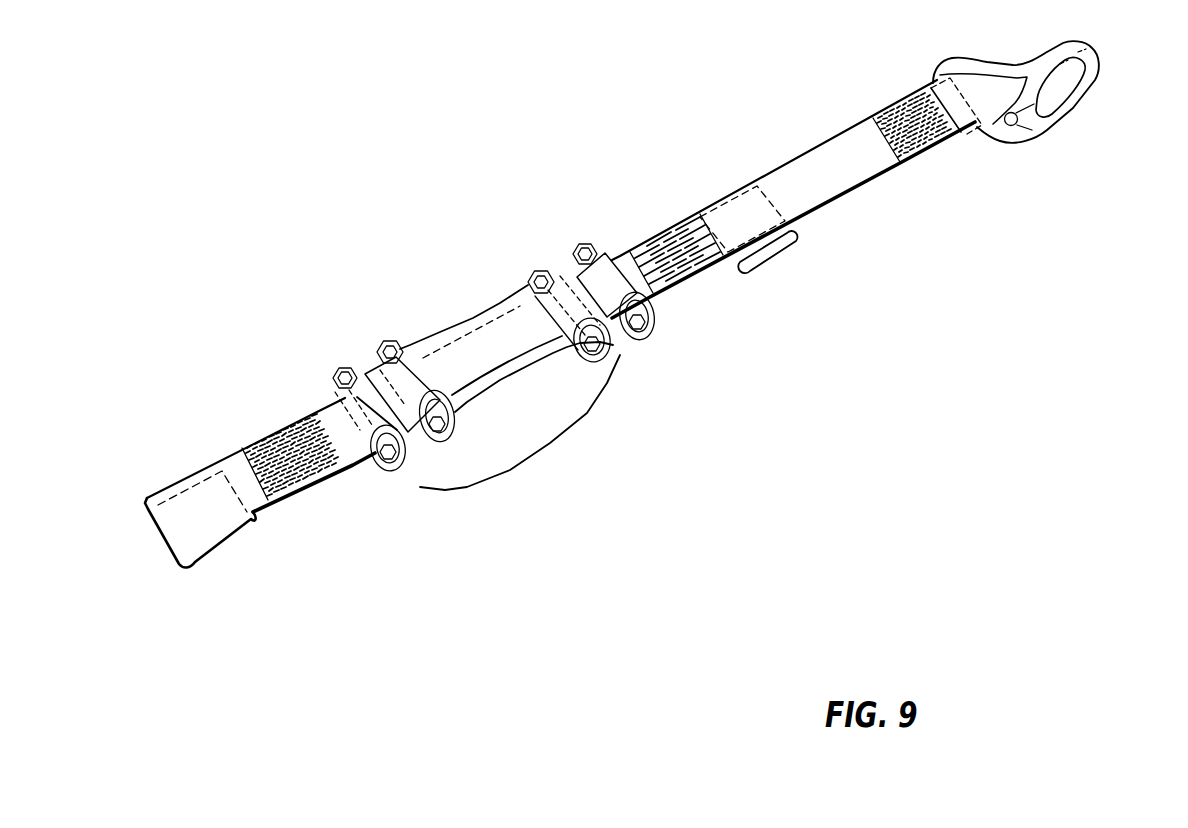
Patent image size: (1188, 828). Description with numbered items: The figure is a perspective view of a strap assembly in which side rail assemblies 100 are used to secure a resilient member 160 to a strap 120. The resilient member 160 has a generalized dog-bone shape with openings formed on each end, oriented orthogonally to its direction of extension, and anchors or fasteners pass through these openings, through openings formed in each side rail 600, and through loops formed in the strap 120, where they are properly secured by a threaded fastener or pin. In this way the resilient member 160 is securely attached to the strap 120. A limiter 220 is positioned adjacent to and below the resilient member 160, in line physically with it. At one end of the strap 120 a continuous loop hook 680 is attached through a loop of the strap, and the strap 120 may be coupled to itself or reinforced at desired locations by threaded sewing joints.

The side rail assembly 100 is at (658, 318).
The strap 120 is at (827, 142).
The resilient member 160 is at (468, 324).
The limiter 220 is at (560, 440).
The side rail 600 is at (411, 446).
The continuous loop hook 680 is at (1098, 84).